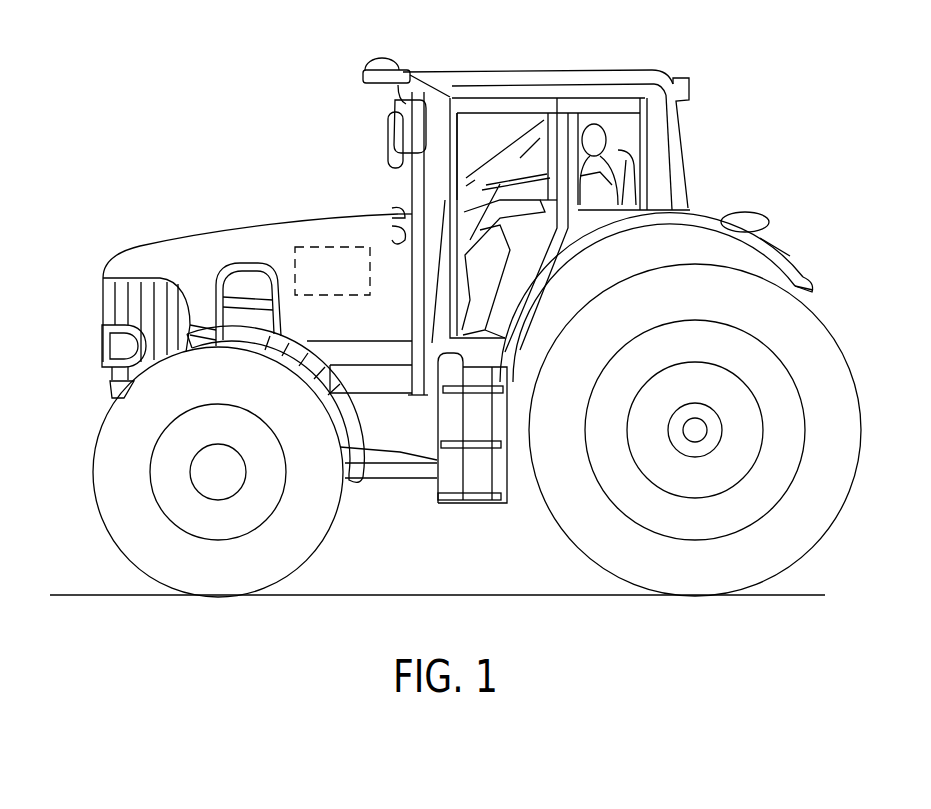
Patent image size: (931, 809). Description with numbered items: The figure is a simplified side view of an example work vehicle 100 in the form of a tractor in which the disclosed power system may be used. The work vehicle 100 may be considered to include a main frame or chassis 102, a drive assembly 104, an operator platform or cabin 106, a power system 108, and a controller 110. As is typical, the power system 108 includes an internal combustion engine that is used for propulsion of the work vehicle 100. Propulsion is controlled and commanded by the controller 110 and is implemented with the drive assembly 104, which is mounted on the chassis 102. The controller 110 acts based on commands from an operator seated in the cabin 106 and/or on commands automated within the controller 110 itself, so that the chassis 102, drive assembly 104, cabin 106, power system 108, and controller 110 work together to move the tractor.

The work vehicle 100 is at (688, 48).
The chassis 102 is at (348, 463).
The drive assembly 104 is at (205, 475).
The cabin 106 is at (492, 91).
The power system 108 is at (206, 247).
The controller 110 is at (333, 247).